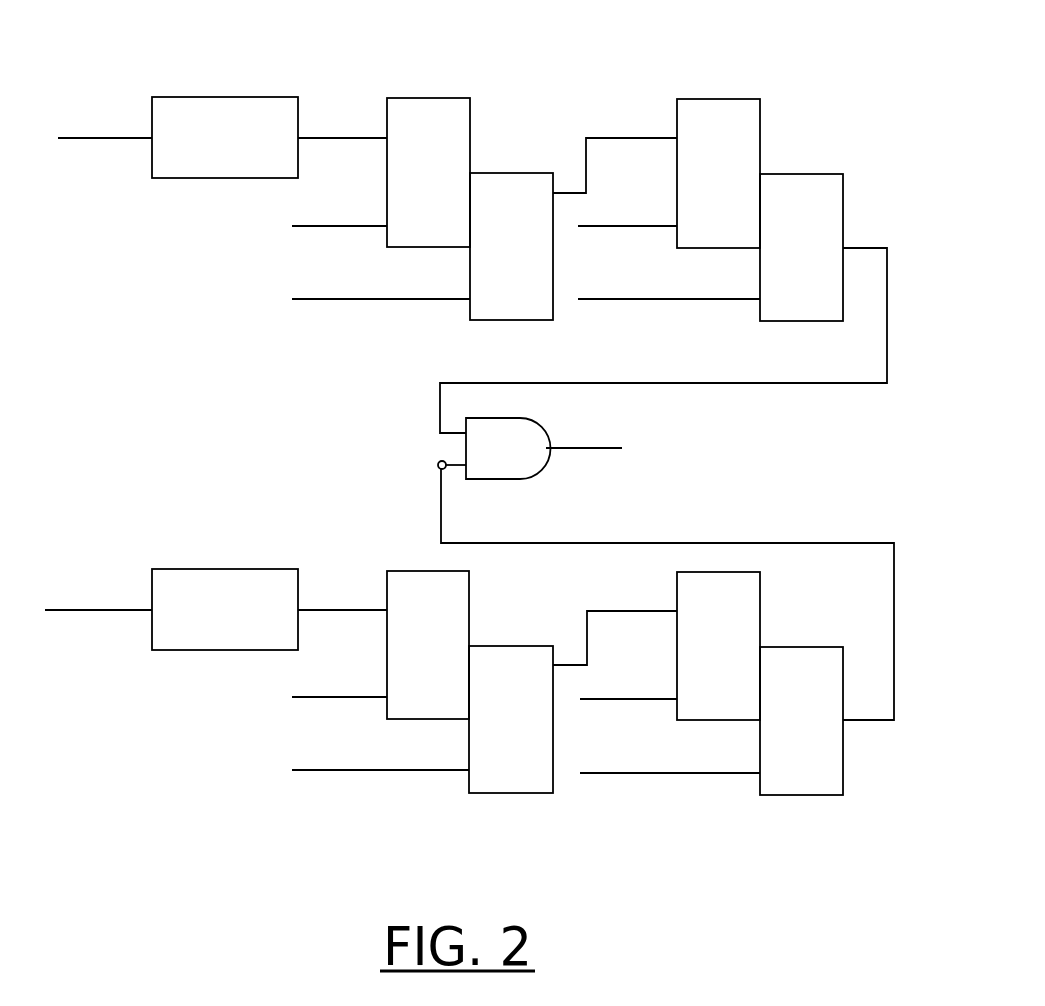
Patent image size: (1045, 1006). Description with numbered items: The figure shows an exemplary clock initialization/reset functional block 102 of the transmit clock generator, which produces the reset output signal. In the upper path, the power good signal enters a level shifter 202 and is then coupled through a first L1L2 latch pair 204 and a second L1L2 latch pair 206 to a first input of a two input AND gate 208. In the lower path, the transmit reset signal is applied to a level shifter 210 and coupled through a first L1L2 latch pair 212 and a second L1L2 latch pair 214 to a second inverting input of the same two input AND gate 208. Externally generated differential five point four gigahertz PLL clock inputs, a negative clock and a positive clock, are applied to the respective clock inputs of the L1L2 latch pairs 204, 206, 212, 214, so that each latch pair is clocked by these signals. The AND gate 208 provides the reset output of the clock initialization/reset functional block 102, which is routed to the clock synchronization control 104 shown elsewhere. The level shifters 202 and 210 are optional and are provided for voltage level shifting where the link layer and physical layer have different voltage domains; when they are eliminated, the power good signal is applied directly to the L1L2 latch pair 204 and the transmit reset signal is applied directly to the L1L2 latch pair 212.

The clock initialization/reset functional block 102 is at (519, 36).
The clock synchronization control 104 is at (760, 455).
The level shifter 202 is at (222, 137).
The first L1L2 latch pair 204 is at (484, 209).
The second L1L2 latch pair 206 is at (663, 266).
The two input AND gate 208 is at (543, 448).
The level shifter 210 is at (215, 609).
The first L1L2 latch pair 212 is at (484, 680).
The second L1L2 latch pair 214 is at (667, 632).